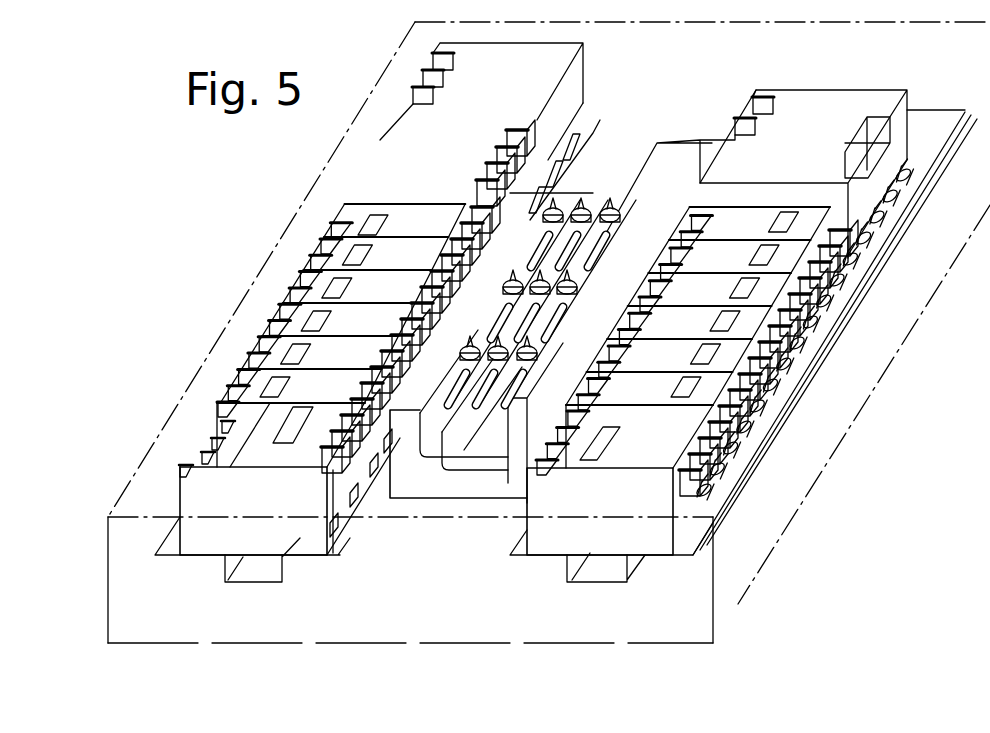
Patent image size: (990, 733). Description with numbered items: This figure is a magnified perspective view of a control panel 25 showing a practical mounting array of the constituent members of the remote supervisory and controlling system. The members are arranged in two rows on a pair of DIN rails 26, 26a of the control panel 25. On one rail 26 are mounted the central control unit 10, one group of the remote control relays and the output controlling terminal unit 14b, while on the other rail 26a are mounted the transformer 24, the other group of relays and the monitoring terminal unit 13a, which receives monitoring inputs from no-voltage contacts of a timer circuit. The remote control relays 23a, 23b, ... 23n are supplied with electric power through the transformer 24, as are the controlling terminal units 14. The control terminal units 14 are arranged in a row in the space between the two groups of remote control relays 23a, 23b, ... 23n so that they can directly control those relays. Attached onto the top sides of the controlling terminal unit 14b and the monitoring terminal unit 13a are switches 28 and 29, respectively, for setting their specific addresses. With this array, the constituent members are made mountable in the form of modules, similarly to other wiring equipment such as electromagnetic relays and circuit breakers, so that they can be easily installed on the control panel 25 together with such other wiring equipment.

The control panel 25 is at (986, 57).
The central control unit 10 is at (537, 53).
The transformer 24 is at (828, 115).
The controlling terminal units 14 is at (580, 217).
The output controlling terminal unit 14b is at (327, 412).
The monitoring terminal unit 13a is at (740, 370).
The remote control relay 23a is at (393, 223).
The remote control relay 23b is at (760, 225).
The remote control relay 23n is at (640, 387).
The DIN rail 26 is at (260, 568).
The DIN rail 26a is at (592, 573).
The switch 28 is at (290, 435).
The switch 29 is at (513, 364).